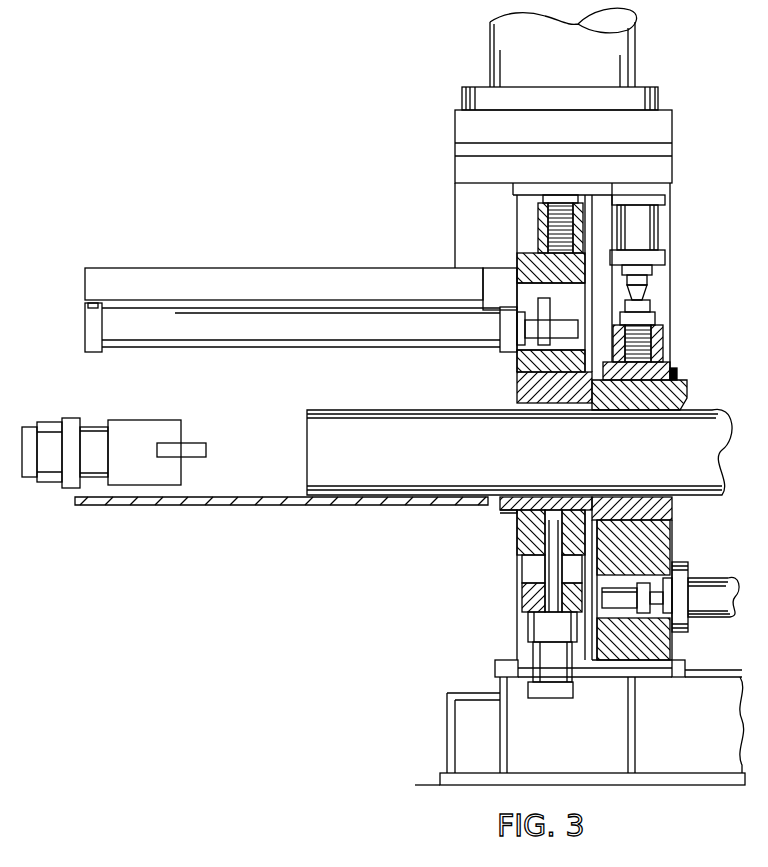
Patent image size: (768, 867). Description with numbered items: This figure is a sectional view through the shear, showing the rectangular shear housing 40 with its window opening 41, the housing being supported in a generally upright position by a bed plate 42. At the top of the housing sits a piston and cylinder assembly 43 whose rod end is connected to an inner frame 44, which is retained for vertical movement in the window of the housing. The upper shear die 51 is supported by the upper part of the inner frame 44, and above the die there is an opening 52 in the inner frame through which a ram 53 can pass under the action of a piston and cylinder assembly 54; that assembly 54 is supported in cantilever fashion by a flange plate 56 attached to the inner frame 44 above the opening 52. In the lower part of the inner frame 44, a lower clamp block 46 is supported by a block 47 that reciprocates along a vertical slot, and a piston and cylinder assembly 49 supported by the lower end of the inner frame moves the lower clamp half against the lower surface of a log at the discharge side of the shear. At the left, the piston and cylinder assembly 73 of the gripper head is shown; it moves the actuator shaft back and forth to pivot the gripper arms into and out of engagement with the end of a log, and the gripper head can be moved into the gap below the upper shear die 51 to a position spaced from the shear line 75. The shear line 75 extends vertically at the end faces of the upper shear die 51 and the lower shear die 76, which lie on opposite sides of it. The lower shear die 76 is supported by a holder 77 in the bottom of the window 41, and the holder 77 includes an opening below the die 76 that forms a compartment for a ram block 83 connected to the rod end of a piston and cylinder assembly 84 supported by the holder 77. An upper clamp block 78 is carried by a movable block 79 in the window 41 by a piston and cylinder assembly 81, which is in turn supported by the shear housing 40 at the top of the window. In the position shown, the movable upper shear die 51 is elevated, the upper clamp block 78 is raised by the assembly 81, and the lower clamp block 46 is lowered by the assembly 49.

The shear housing 40 is at (673, 170).
The window opening 41 is at (520, 636).
The bed plate 42 is at (447, 718).
The piston and cylinder assembly 43 is at (652, 49).
The inner frame 44 is at (532, 283).
The lower clamp block 46 is at (506, 511).
The block 47 is at (528, 547).
The piston and cylinder assembly 49 is at (555, 700).
The upper shear die 51 is at (518, 392).
The opening 52 is at (535, 284).
The ram 53 is at (565, 325).
The piston and cylinder assembly 54 is at (247, 347).
The flange plate 56 is at (497, 278).
The piston and cylinder assembly 73 is at (32, 425).
The shear line 75 is at (598, 552).
The lower shear die 76 is at (673, 506).
The holder 77 is at (675, 556).
The upper clamp block 78 is at (686, 395).
The movable block 79 is at (672, 368).
The piston and cylinder assembly 81 is at (660, 232).
The ram block 83 is at (630, 608).
The piston and cylinder assembly 84 is at (718, 620).